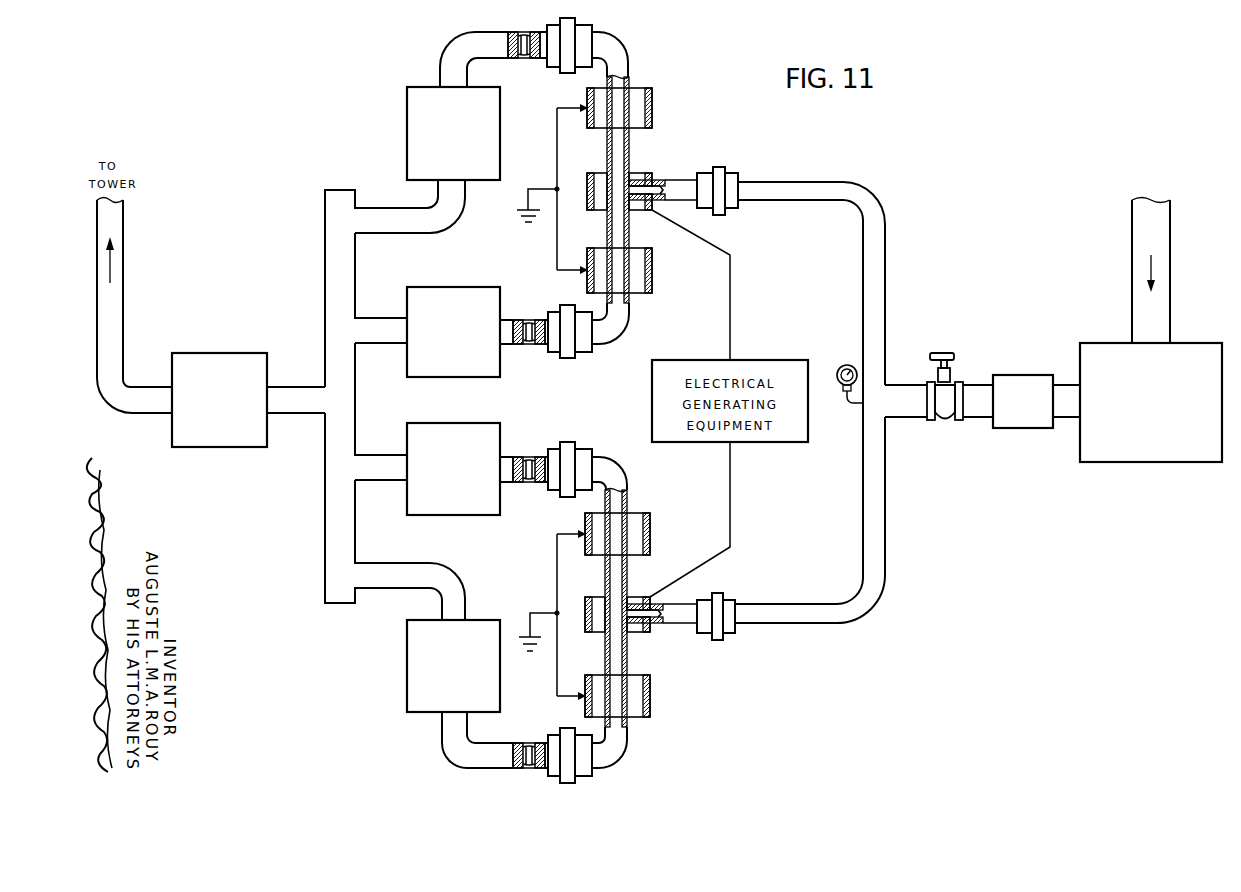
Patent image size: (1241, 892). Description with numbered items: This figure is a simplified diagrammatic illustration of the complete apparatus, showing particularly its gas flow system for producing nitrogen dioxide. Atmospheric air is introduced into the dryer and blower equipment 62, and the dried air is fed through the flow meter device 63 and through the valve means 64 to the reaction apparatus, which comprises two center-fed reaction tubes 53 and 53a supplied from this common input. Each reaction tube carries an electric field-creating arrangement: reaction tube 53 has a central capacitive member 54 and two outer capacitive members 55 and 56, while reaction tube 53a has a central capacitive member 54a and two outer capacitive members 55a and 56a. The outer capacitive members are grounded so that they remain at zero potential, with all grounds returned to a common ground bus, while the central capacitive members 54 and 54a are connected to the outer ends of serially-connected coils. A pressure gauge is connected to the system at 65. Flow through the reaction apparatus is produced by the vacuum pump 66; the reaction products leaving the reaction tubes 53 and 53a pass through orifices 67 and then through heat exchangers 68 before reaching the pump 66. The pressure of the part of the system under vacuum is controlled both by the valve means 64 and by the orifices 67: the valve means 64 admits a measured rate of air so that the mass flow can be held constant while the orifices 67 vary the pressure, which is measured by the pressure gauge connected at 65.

The reaction tube 53 is at (632, 150).
The reaction tube 53a is at (630, 657).
The central capacitive member 54 is at (590, 176).
The central capacitive member 54a is at (587, 600).
The outer capacitive member 55 is at (654, 271).
The outer capacitive member 55a is at (652, 697).
The outer capacitive member 56 is at (655, 103).
The outer capacitive member 56a is at (652, 532).
The dryer and blower equipment 62 is at (1153, 462).
The flow meter device 63 is at (1025, 428).
The valve means 64 is at (946, 421).
The pressure gauge connection 65 is at (845, 364).
The vacuum pump 66 is at (214, 353).
The orifices 67 is at (514, 33).
The heat exchangers 68 is at (407, 120).